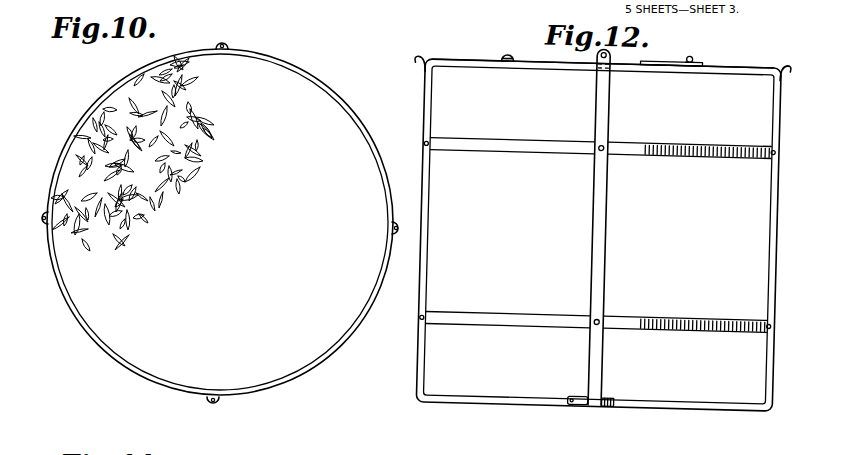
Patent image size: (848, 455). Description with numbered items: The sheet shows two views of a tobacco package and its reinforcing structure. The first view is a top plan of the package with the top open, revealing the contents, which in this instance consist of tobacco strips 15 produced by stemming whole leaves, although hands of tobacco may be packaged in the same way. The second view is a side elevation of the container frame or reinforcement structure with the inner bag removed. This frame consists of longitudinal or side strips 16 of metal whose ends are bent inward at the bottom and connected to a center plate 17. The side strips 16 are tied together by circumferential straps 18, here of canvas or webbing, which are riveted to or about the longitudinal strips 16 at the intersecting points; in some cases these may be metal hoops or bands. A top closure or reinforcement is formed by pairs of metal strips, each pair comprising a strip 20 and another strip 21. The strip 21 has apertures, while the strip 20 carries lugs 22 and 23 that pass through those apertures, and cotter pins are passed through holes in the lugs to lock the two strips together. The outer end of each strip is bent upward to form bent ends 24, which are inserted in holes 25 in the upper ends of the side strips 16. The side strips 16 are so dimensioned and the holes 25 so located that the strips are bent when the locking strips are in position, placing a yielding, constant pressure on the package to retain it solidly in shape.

In FIG. 10, the tobacco strips 15 is at (62, 165).
In FIG. 12, the longitudinal or side strips 16 is at (608, 250).
In FIG. 12, the center plate 17 is at (616, 400).
In FIG. 12, the circumferential straps 18 is at (685, 157).
In FIG. 12, the strip 20 is at (650, 72).
In FIG. 12, the strip 21 is at (648, 62).
In FIG. 12, the lug 22 is at (689, 59).
In FIG. 12, the lug 23 is at (503, 57).
In FIG. 12, the bent ends 24 is at (417, 65).
In FIG. 10, the holes 25 is at (229, 43).
In FIG. 12, the holes 25 is at (435, 40).